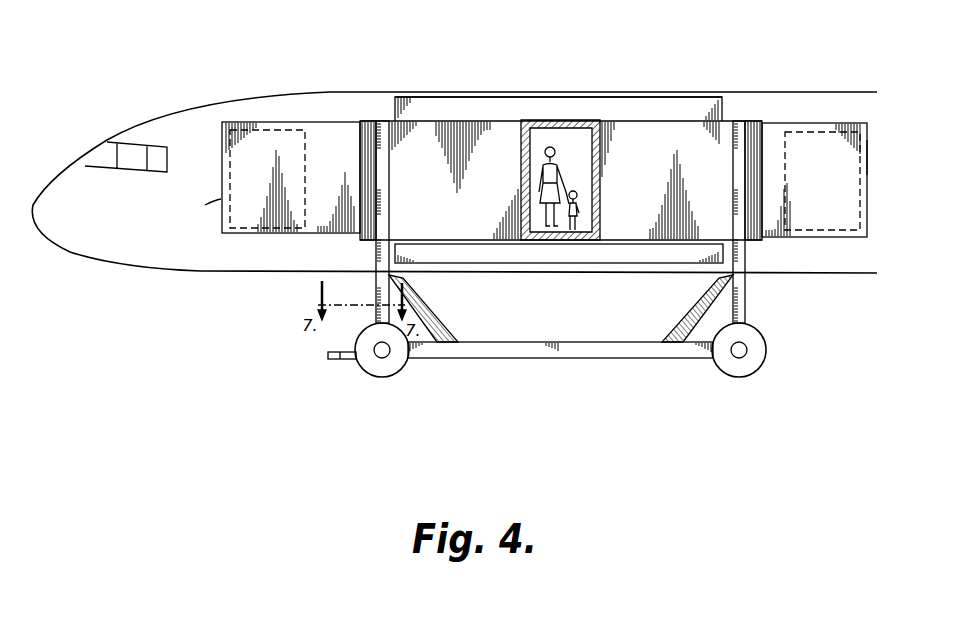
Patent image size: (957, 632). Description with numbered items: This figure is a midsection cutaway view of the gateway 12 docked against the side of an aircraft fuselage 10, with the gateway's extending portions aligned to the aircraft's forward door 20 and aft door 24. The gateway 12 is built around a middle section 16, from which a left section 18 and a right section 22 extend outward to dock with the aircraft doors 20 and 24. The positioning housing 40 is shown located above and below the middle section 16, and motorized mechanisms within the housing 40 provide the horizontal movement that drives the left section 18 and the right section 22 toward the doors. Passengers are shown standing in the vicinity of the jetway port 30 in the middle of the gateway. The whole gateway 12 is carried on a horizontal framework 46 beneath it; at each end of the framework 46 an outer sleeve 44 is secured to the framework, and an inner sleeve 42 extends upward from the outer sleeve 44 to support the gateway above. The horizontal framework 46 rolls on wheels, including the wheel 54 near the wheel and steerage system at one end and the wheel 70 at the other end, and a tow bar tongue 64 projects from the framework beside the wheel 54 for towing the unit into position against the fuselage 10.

The aircraft fuselage 10 is at (246, 94).
The gateway 12 is at (618, 94).
The middle section 16 is at (752, 121).
The left section 18 is at (267, 234).
The forward door 20 is at (221, 199).
The right section 22 is at (838, 238).
The aft door 24 is at (866, 157).
The jetway port 30 is at (547, 120).
The positioning housing 40 is at (446, 96).
The inner sleeve 42 is at (395, 244).
The outer sleeve 44 is at (377, 286).
The horizontal framework 46 is at (523, 358).
The wheel 54 is at (368, 372).
The tow bar tongue 64 is at (334, 359).
The right wheel 70 is at (763, 357).